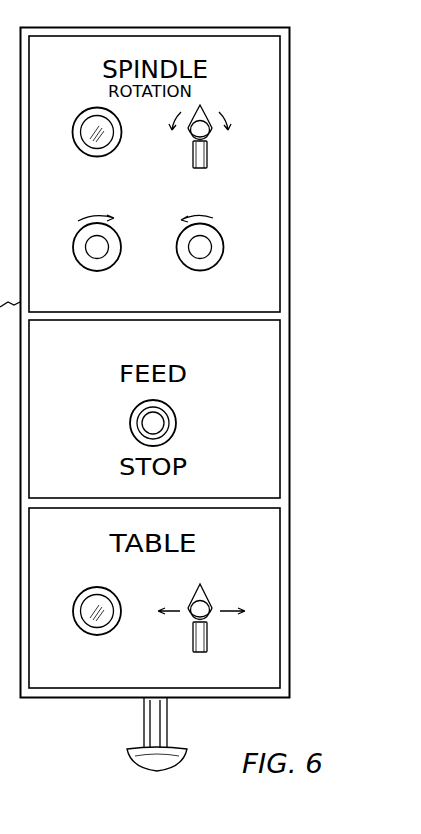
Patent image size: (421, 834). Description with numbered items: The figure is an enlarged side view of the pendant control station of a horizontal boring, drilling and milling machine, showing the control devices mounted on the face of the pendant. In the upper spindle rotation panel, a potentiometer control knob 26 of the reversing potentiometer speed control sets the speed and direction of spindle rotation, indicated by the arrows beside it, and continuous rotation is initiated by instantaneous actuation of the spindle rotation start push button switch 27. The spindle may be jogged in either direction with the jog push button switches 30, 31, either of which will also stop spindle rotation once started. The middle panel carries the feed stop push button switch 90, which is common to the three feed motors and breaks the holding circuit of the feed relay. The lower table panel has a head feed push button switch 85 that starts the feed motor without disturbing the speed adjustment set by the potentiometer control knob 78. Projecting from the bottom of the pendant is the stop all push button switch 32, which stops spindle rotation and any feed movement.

The potentiometer control knob 26 is at (207, 163).
The spindle rotation start push button switch 27 is at (73, 124).
The spindle jog push button switch 30 is at (73, 242).
The spindle jog push button switch 31 is at (225, 241).
The feed stop push button switch 90 is at (177, 418).
The head feed push button switch 85 is at (77, 597).
The potentiometer control knob 78 is at (207, 630).
The stop all push button switch 32 is at (145, 724).